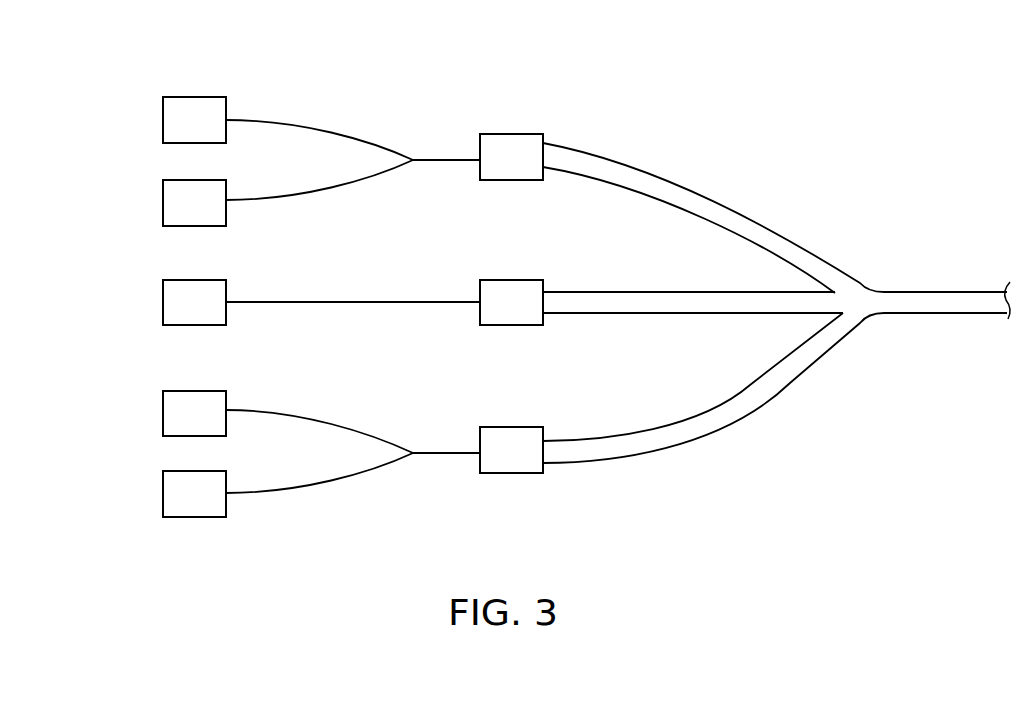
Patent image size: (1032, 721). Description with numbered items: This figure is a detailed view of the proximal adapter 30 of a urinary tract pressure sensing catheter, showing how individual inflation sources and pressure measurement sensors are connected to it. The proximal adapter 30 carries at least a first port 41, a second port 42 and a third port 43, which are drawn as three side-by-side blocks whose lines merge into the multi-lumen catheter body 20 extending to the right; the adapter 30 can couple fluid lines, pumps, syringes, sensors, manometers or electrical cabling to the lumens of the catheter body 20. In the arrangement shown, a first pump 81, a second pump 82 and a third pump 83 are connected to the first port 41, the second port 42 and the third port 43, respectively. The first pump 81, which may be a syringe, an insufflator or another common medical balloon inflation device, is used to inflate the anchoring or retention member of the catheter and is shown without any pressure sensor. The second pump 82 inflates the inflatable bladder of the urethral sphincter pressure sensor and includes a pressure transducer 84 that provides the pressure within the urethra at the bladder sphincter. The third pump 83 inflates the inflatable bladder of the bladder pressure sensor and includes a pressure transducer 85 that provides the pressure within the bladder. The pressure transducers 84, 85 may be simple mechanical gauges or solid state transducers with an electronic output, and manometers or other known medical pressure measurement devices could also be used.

The proximal adapter 30 is at (838, 64).
The multi-lumen catheter body 20 is at (958, 303).
The first port 41 is at (507, 134).
The second port 42 is at (510, 280).
The third port 43 is at (512, 427).
The first pump 81 is at (162, 299).
The second pump 82 is at (162, 200).
The third pump 83 is at (162, 413).
The pressure transducer 84 is at (162, 119).
The pressure transducer 85 is at (162, 494).